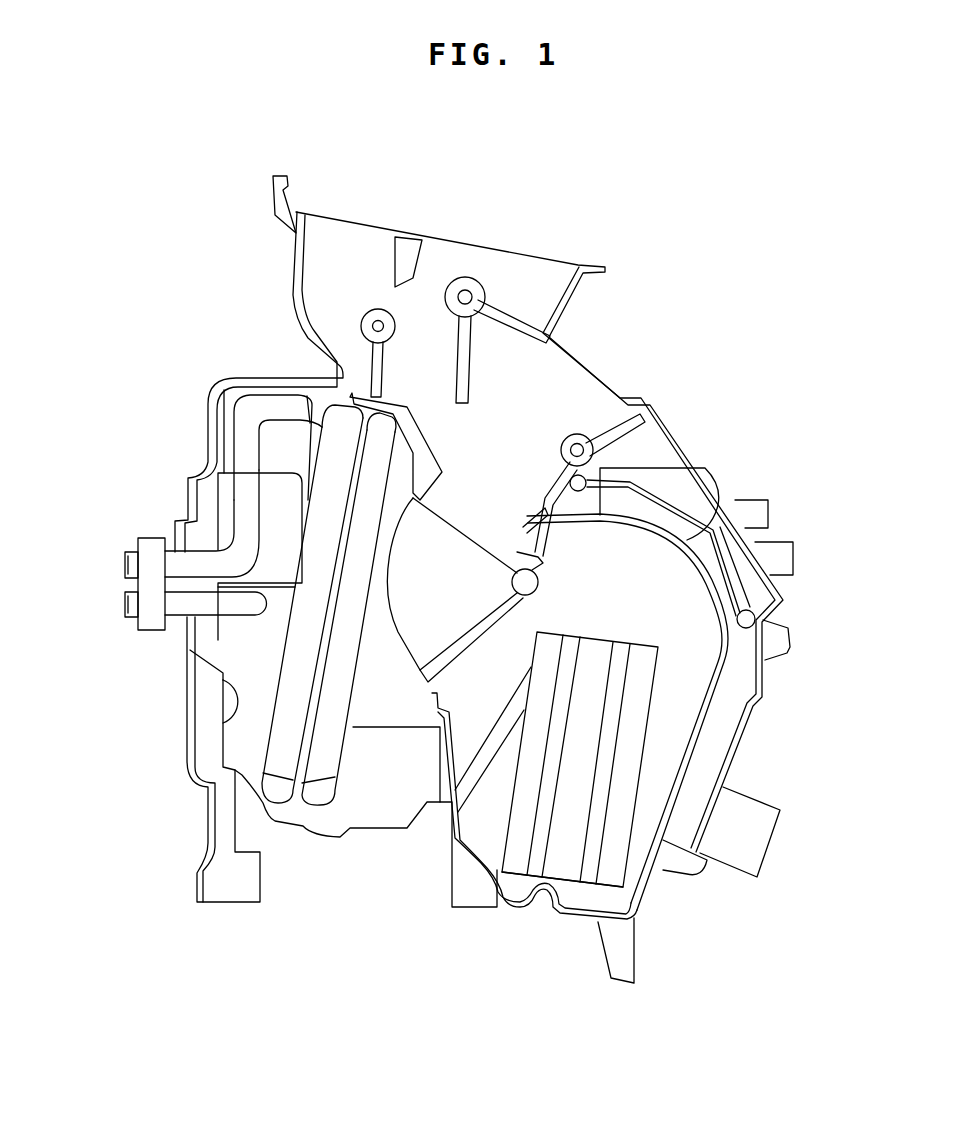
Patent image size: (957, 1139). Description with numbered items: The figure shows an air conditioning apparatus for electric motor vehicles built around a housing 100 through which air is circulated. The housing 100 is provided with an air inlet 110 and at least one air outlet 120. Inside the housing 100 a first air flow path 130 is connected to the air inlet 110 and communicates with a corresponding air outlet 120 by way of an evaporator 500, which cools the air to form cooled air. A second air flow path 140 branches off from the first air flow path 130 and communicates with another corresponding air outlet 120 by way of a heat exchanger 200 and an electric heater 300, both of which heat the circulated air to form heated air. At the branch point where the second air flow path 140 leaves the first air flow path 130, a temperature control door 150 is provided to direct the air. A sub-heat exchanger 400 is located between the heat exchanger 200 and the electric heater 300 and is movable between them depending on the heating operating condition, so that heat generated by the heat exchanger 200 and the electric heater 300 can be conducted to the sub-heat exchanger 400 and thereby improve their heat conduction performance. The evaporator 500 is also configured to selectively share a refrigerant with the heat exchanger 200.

The housing 100 is at (642, 398).
The air inlet 110 is at (250, 714).
The air outlet 120 is at (408, 248).
The first air flow path 130 is at (478, 497).
The second air flow path 140 is at (480, 755).
The temperature control door 150 is at (471, 630).
The heat exchanger 200 is at (527, 795).
The electric heater 300 is at (630, 731).
The sub-heat exchanger 400 is at (567, 858).
The evaporator 500 is at (300, 655).